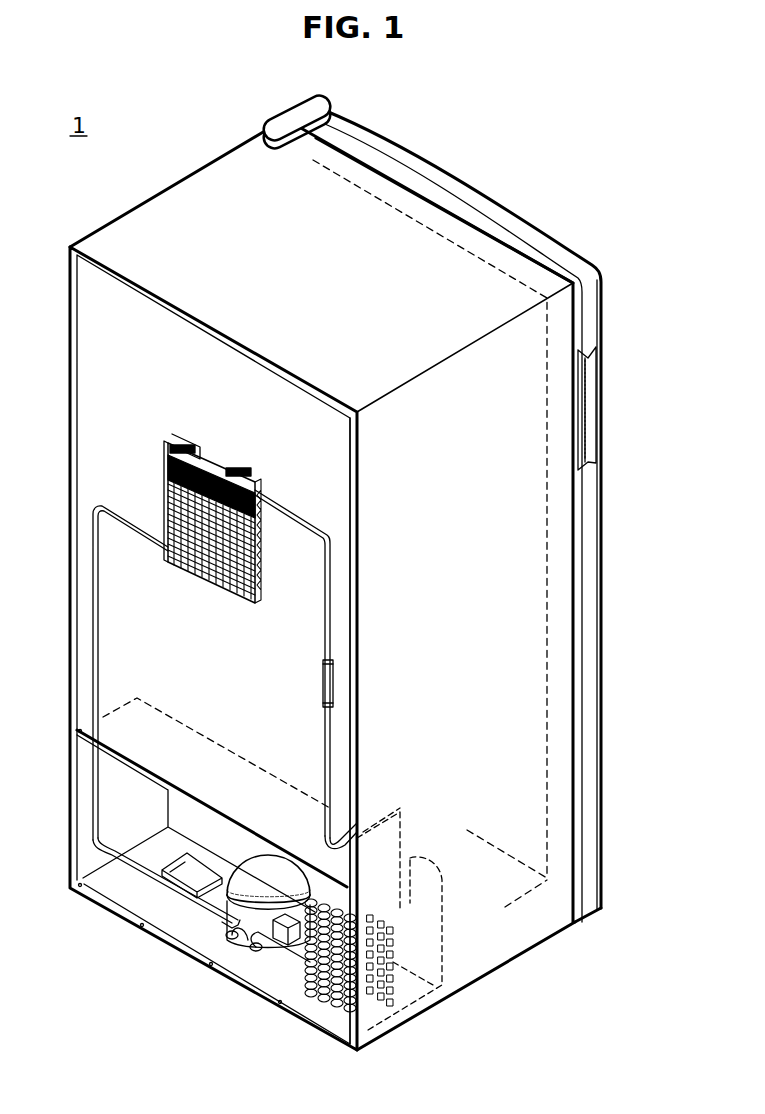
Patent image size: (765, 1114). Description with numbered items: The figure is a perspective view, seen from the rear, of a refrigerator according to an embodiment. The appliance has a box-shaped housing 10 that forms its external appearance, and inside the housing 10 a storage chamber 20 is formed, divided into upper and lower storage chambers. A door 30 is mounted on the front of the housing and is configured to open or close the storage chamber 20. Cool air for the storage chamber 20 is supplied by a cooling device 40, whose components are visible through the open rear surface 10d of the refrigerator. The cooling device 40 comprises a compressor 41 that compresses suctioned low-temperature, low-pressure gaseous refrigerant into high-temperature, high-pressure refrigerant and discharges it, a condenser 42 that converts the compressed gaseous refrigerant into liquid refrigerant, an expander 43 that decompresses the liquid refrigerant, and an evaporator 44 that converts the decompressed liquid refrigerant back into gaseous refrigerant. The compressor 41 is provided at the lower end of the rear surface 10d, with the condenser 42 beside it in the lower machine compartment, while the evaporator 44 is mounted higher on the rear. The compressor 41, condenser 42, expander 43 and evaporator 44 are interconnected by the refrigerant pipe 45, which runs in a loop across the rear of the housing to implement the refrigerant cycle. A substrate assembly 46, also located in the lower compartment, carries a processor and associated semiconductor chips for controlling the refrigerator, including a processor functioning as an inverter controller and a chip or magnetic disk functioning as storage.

The housing 10 is at (207, 183).
The rear surface 10d is at (328, 464).
The storage chamber 20 is at (520, 543).
The door 30 is at (598, 438).
The cooling device 40 is at (428, 617).
The compressor 41 is at (247, 935).
The condenser 42 is at (307, 978).
The expander 43 is at (330, 688).
The evaporator 44 is at (233, 597).
The refrigerant pipe 45 is at (95, 609).
The substrate assembly 46 is at (178, 870).